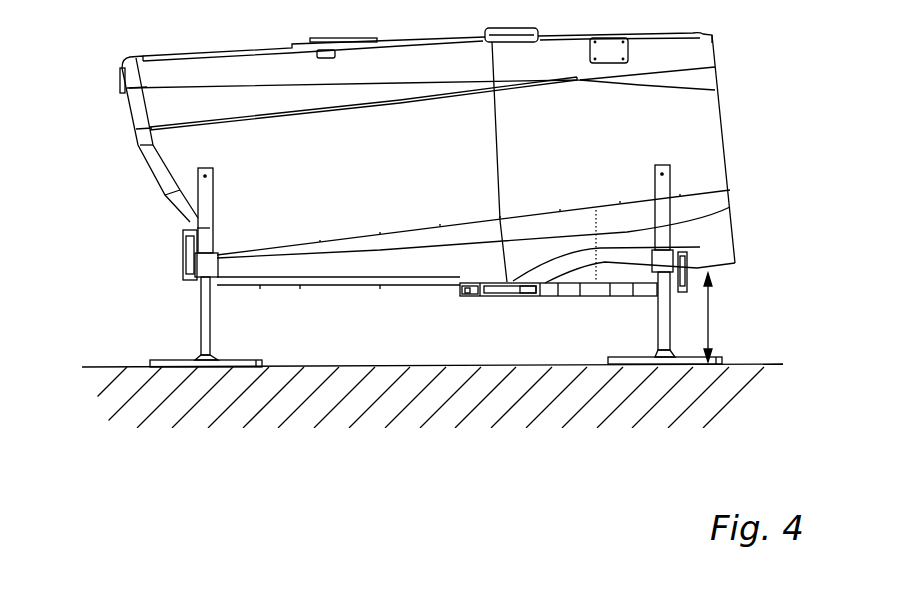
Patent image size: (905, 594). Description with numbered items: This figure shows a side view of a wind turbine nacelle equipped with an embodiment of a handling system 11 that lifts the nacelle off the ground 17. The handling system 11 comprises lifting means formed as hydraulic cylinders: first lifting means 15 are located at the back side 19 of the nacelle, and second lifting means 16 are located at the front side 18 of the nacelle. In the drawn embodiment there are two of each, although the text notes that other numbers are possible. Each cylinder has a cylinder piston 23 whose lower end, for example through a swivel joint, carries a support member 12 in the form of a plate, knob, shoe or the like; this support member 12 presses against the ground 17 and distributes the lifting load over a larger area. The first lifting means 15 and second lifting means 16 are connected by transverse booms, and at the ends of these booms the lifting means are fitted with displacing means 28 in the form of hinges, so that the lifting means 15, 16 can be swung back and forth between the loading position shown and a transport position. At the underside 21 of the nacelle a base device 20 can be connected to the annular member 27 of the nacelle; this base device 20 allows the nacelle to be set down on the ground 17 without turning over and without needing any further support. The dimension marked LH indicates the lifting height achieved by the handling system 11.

The handling system 11 is at (762, 325).
The support member 12 is at (237, 358).
The first lifting means 15 is at (195, 229).
The second lifting means 16 is at (668, 178).
The ground 17 is at (117, 366).
The front side 18 is at (728, 196).
The back side 19 is at (162, 194).
The base device 20 is at (497, 287).
The underside 21 is at (423, 283).
The cylinder piston 23 is at (663, 330).
The annular member 27 is at (533, 288).
The displacing means 28 is at (693, 262).